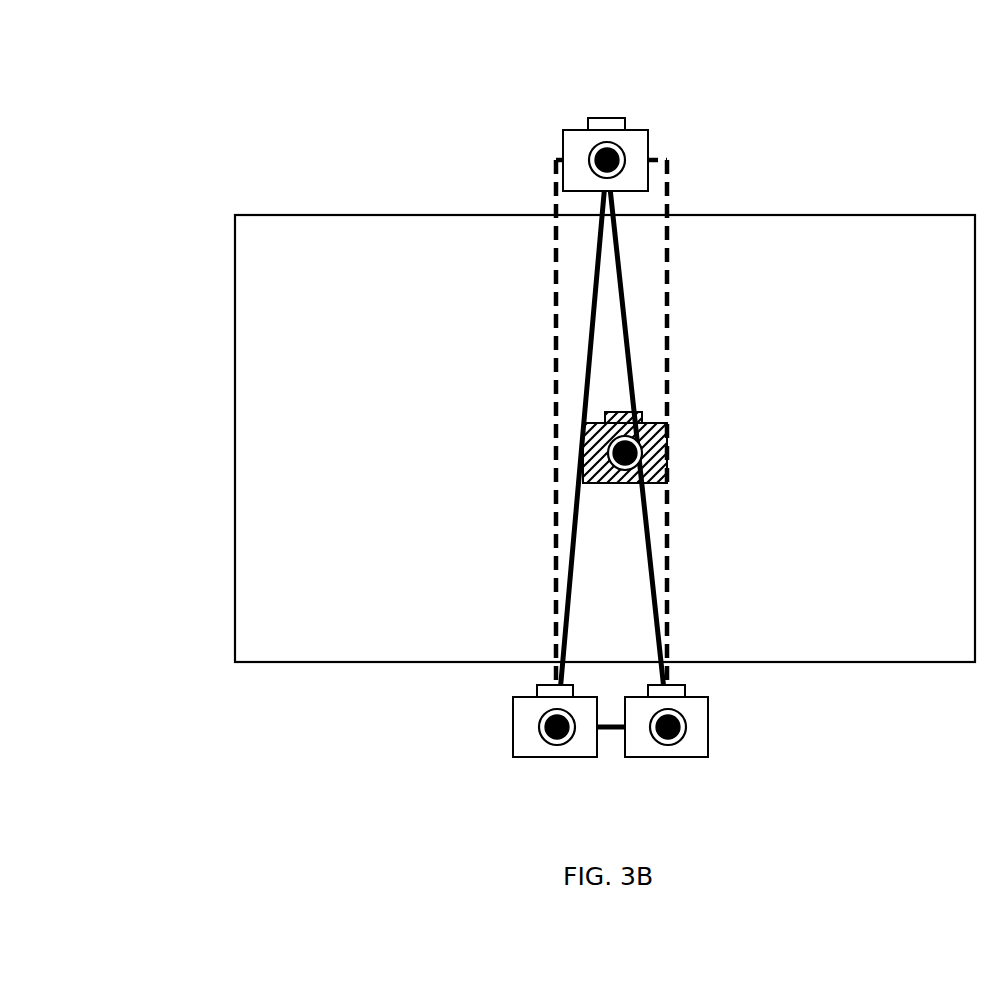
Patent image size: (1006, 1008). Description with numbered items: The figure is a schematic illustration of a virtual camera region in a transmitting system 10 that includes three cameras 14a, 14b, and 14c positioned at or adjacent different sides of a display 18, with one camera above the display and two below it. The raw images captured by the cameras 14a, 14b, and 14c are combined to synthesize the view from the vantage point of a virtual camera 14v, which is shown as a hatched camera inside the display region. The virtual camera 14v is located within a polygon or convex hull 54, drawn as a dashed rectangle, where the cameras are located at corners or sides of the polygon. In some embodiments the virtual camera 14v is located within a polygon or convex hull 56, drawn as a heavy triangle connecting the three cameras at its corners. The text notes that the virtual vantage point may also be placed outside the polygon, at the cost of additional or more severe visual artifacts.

The transmitting system 10 is at (116, 91).
The display 18 is at (285, 215).
The polygon or convex hull 54 is at (667, 173).
The polygon or convex hull 56 is at (593, 300).
The first camera 14a is at (635, 130).
The second camera 14b is at (583, 758).
The third camera 14c is at (695, 758).
The virtual camera 14v is at (660, 422).